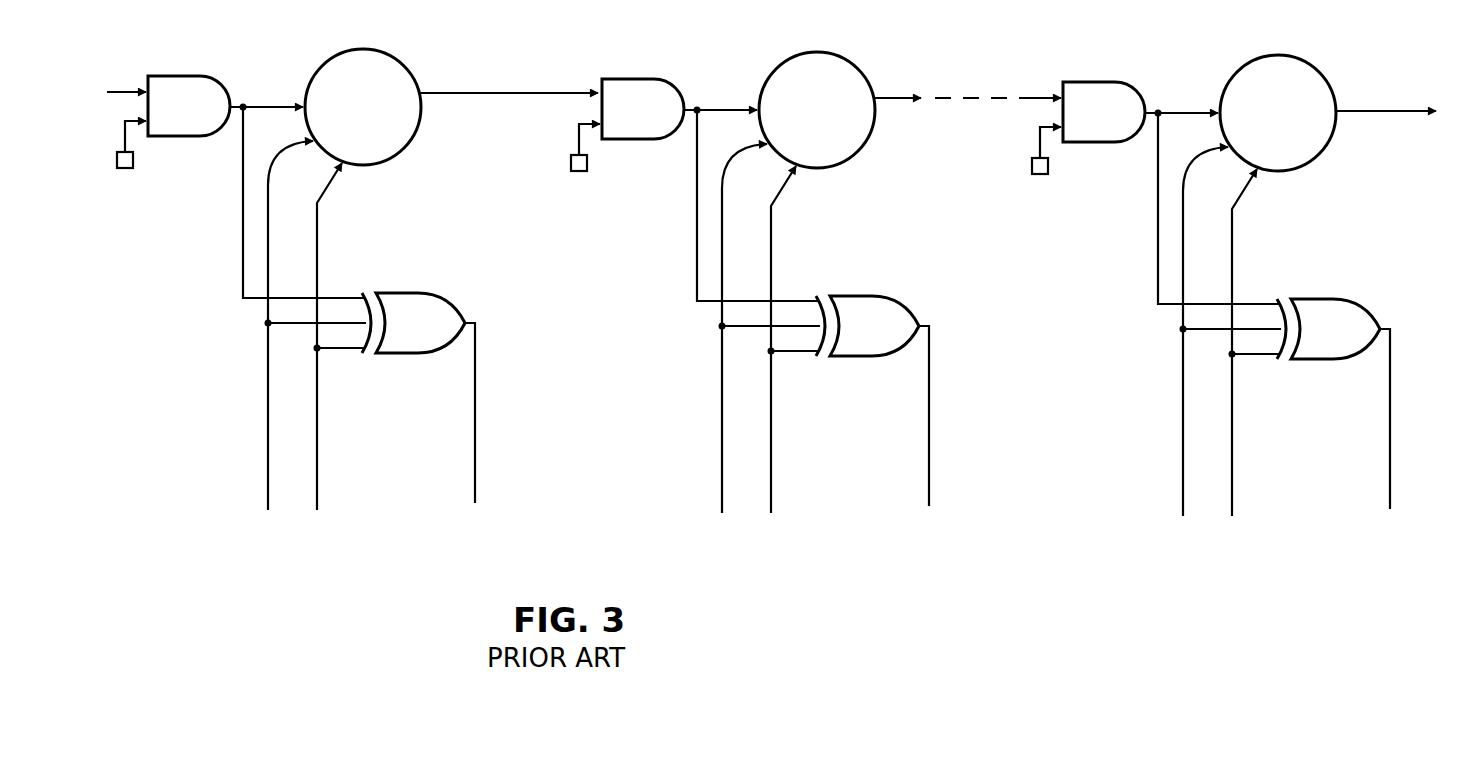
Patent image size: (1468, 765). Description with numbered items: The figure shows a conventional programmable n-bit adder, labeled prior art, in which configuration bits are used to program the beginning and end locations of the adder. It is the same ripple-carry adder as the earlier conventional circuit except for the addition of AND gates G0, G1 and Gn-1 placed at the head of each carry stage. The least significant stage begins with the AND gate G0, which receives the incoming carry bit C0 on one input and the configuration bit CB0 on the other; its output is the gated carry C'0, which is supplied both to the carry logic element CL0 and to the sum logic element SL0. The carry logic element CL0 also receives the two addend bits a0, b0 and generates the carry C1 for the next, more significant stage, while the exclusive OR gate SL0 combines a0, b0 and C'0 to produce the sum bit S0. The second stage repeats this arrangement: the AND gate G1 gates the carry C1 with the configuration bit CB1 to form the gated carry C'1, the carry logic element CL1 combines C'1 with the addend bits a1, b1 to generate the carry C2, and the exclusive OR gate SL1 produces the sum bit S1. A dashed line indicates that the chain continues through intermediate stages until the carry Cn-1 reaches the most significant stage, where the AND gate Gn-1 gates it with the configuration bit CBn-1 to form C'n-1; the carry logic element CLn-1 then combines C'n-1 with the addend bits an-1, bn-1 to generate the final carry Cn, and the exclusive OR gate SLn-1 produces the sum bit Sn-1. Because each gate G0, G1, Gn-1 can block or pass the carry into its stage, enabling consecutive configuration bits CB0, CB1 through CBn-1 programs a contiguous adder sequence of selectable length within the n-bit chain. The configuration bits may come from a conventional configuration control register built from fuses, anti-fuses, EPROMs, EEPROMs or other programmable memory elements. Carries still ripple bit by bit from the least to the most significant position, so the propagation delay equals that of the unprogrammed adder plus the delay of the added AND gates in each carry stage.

The AND gate G0 is at (189, 84).
The AND gate G1 is at (643, 87).
The AND gate Gn-1 is at (1104, 89).
The carry logic element CL0 is at (363, 107).
The carry logic element CL1 is at (817, 110).
The carry logic element CLn-1 is at (1278, 113).
The sum logic element SL0 is at (413, 346).
The sum logic element SL1 is at (867, 350).
The sum logic element SLn-1 is at (1328, 353).
The configuration bit CB0 is at (131, 168).
The configuration bit CB1 is at (594, 171).
The configuration bit CBn-1 is at (1058, 173).
The carry bit C0 is at (121, 68).
The gated carry bit C'0 is at (297, 182).
The carry bit C1 is at (508, 74).
The gated carry bit C'1 is at (751, 184).
The carry bit C2 is at (897, 78).
The carry bit Cn-1 is at (998, 77).
The gated carry bit C'n-1 is at (1210, 187).
The carry bit Cn is at (1386, 92).
The addend bit a0 is at (340, 356).
The addend bit b0 is at (307, 345).
The sum bit S0 is at (485, 436).
The addend bit a1 is at (794, 358).
The addend bit b1 is at (761, 347).
The sum bit S1 is at (940, 438).
The addend bit an-1 is at (1254, 359).
The addend bit bn-1 is at (1214, 348).
The sum bit Sn-1 is at (1401, 439).